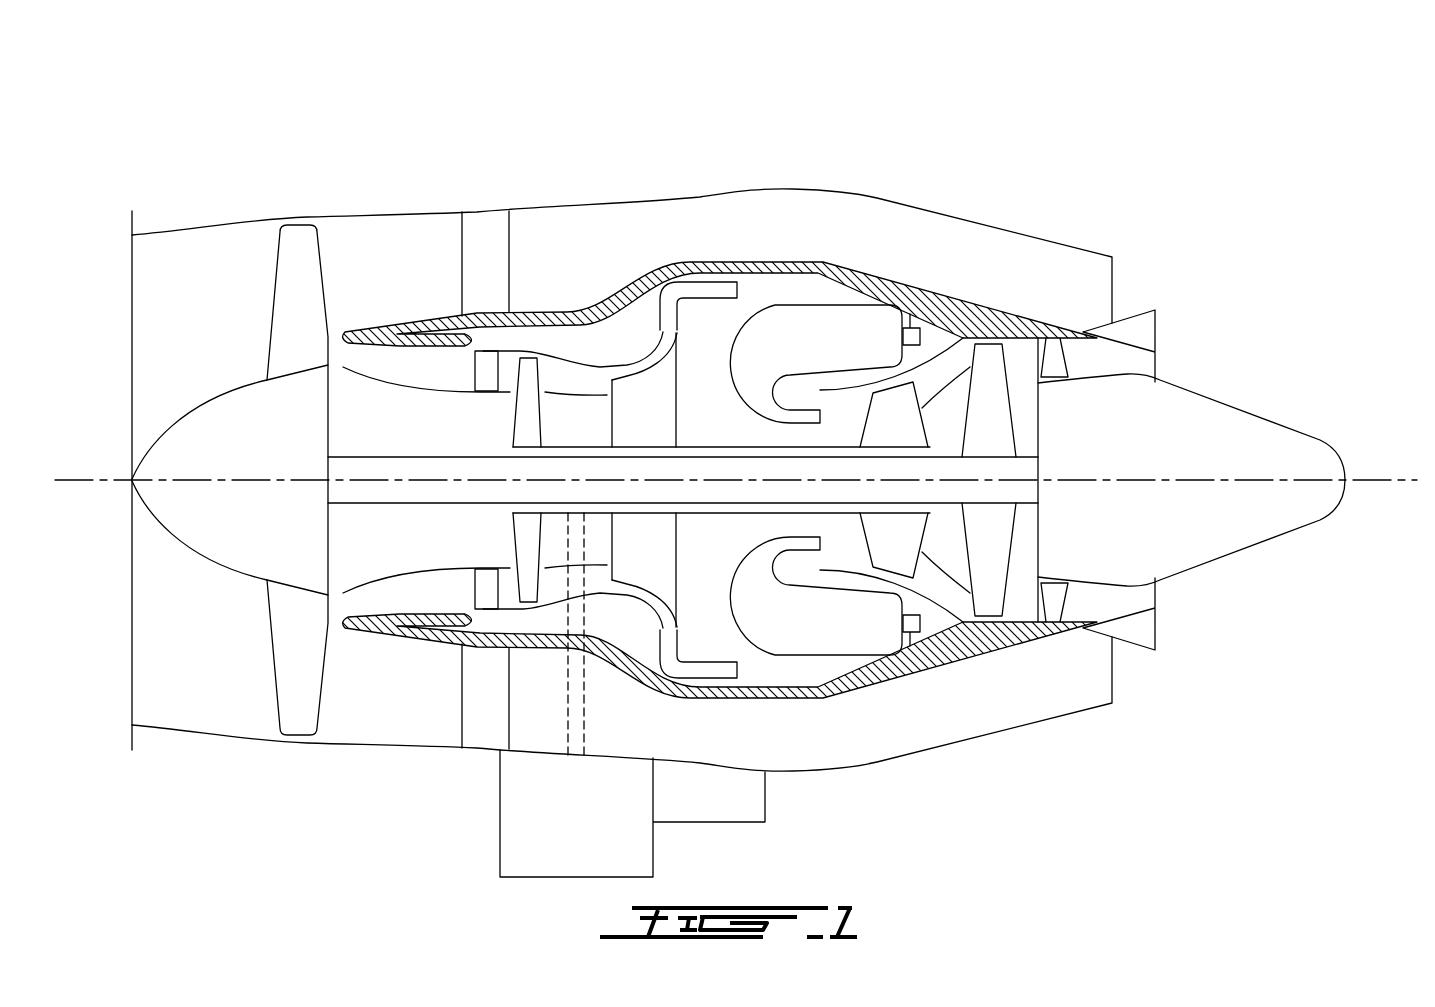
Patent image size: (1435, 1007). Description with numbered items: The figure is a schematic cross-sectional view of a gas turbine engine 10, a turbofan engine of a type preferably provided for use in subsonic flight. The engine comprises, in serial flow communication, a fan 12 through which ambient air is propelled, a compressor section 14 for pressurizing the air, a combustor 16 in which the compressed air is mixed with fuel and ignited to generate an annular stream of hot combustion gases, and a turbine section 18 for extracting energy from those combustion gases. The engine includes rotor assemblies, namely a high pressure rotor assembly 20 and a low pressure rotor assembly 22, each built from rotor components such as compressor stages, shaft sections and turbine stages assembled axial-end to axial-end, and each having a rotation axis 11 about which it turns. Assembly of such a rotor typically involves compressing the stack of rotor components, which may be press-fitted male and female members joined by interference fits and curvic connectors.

The gas turbine engine 10 is at (912, 186).
The rotation axis 11 is at (1385, 480).
The fan 12 is at (292, 647).
The compressor section 14 is at (565, 372).
The combustor 16 is at (800, 328).
The turbine section 18 is at (943, 552).
The high pressure rotor assembly 20 is at (585, 447).
The low pressure rotor assembly 22 is at (383, 467).